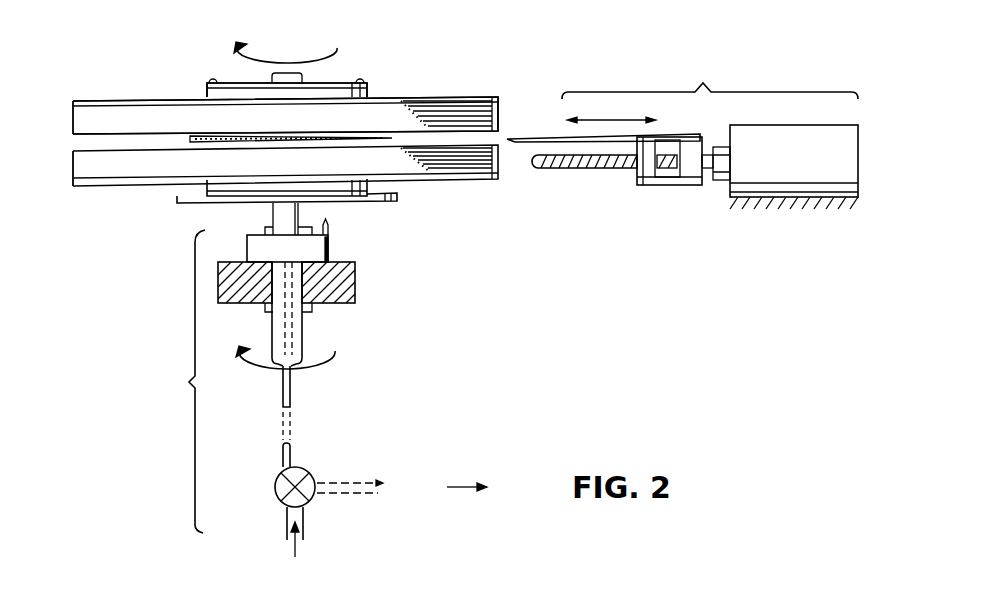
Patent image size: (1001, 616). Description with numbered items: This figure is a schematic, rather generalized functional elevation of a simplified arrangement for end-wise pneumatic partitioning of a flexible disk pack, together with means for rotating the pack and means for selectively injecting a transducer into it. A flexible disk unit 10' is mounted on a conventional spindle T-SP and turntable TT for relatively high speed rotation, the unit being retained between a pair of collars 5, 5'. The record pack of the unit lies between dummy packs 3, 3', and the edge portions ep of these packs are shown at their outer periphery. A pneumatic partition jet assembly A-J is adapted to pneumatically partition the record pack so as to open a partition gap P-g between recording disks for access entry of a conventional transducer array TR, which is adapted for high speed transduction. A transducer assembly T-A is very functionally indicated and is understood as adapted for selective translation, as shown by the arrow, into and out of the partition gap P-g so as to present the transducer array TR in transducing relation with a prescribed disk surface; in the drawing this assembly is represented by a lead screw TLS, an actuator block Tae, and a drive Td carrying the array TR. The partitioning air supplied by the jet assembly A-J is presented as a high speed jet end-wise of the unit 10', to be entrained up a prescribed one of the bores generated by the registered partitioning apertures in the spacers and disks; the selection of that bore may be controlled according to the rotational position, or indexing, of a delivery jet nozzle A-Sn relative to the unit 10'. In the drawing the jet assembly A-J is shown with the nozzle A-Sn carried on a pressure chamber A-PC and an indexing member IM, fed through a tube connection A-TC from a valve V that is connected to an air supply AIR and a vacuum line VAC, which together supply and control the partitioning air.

The flexible disk unit 10' is at (285, 77).
The collar 5 is at (270, 72).
The collar 5' is at (253, 216).
The dummy pack 3 is at (285, 94).
The dummy pack 3' is at (285, 188).
The edge portion ep is at (78, 101).
The partition gap P-g is at (85, 143).
The turntable TT is at (402, 197).
The spindle T-SP is at (302, 78).
The delivery jet nozzle A-Sn is at (330, 231).
The air pressure chamber A-PC is at (330, 250).
The index motor IM is at (355, 290).
The air tube connection A-TC is at (292, 398).
The pneumatic partition jet assembly A-J is at (170, 381).
The valve V is at (278, 492).
The vacuum line VAC is at (402, 489).
The air supply AIR is at (293, 546).
The transducer array TR is at (514, 140).
The transducer array T-A is at (710, 78).
The lead screw TLS is at (600, 168).
The actuator end block Tae is at (665, 187).
The drive motor Td is at (790, 177).